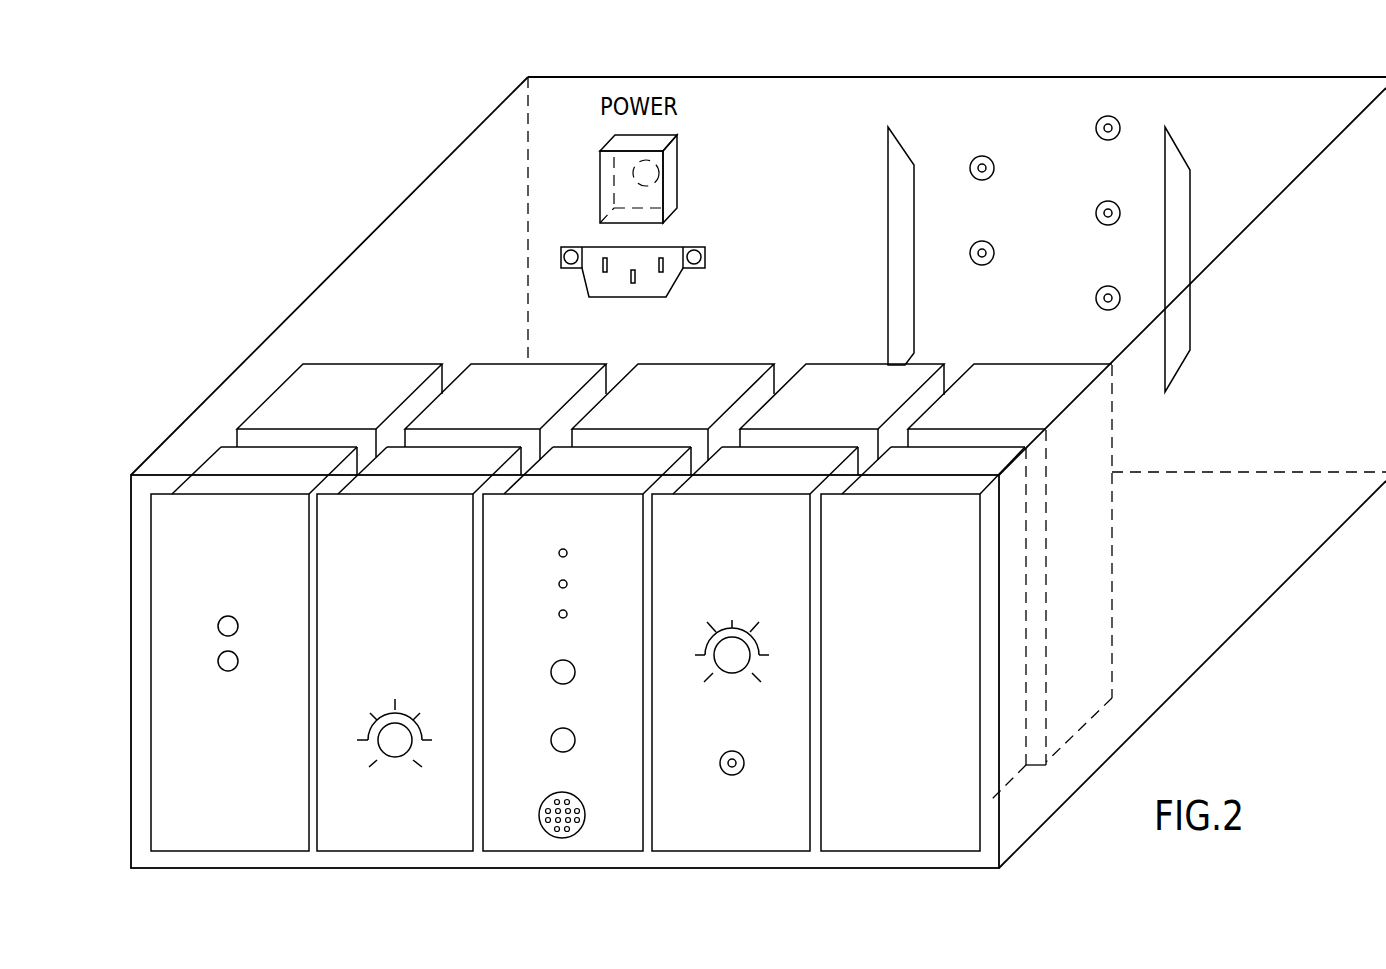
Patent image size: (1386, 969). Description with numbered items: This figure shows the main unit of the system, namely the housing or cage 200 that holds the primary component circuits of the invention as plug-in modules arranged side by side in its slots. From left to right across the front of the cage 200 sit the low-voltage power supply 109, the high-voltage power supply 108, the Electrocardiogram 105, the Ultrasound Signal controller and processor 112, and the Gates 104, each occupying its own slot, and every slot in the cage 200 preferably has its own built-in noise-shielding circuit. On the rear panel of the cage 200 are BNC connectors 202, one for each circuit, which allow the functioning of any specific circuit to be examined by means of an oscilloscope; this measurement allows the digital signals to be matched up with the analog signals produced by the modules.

The housing or cage 200 is at (1223, 603).
The BNC connectors 202 is at (1097, 289).
The low-voltage power supply 109 is at (200, 835).
The high-voltage power supply 108 is at (368, 838).
The Electrocardiogram 105 is at (519, 840).
The Ultrasound Signal controller and processor 112 is at (693, 836).
The Gates 104 is at (890, 840).